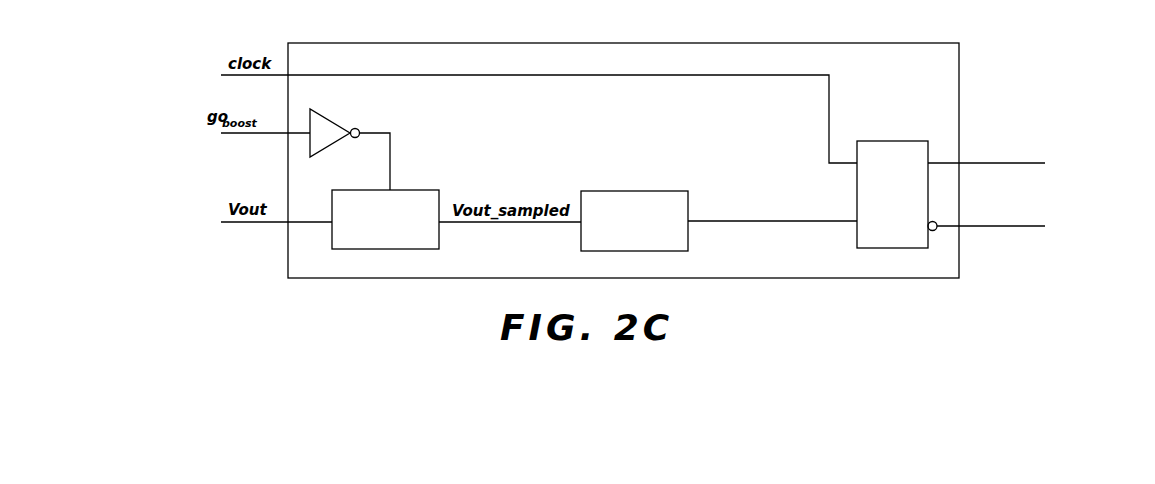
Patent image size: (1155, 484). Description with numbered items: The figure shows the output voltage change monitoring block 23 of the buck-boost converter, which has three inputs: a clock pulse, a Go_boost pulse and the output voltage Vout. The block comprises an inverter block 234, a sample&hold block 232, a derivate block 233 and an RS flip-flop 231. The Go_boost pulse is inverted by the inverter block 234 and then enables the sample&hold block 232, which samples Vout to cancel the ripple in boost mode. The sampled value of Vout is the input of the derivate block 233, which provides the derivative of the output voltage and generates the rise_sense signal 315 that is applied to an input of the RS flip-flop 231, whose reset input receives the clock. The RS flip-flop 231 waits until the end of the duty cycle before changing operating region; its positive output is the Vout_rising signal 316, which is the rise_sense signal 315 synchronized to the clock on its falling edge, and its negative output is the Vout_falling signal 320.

The output voltage change monitoring block 23 is at (900, 43).
The RS flip-flop 231 is at (871, 141).
The sample&hold block 232 is at (404, 190).
The derivate block 233 is at (640, 191).
The inverter block 234 is at (336, 116).
The rise_sense signal 315 is at (722, 222).
The Vout_rising signal 316 is at (997, 164).
The Vout_falling signal 320 is at (997, 227).